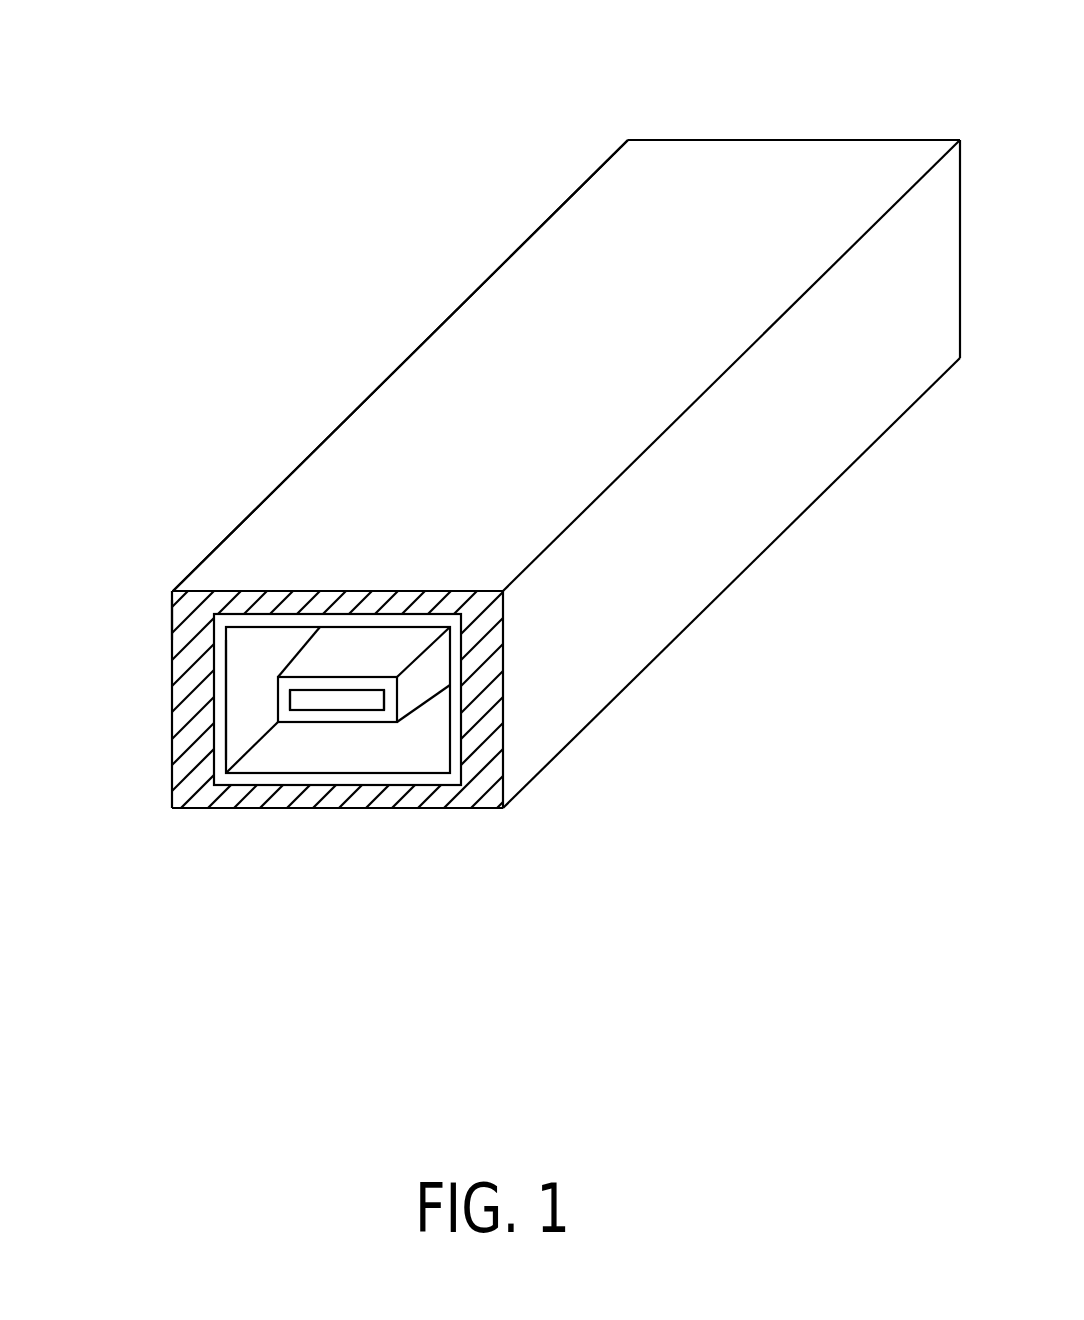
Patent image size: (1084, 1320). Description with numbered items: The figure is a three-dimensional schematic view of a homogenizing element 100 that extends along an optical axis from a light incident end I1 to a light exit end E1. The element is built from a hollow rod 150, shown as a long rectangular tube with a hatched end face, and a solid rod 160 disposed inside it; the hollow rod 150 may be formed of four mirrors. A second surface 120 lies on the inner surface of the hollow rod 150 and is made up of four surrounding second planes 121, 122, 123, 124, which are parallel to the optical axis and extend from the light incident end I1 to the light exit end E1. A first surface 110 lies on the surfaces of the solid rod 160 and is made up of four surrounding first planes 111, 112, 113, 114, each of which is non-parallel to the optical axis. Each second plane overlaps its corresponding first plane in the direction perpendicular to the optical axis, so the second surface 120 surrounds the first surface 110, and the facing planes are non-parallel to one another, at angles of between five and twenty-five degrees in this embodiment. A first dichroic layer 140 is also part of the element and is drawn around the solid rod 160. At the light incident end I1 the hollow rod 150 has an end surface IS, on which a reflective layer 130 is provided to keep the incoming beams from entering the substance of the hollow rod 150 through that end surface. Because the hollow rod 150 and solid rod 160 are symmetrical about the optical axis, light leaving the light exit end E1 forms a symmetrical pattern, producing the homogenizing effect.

The homogenizing element 100 is at (192, 163).
The light exit end E1 is at (667, 132).
The light incident end I1 is at (167, 620).
The end surface IS is at (200, 757).
The hollow rod 150 is at (718, 553).
The second surface 120 is at (357, 699).
The second plane 121 is at (422, 610).
The second plane 122 is at (302, 793).
The second plane 123 is at (210, 730).
The second plane 124 is at (473, 713).
The reflective layer 130 is at (455, 747).
The first dichroic layer 140 is at (362, 683).
The first surface 110 is at (337, 700).
The first plane 111 is at (308, 687).
The first plane 112 is at (360, 714).
The first plane 113 is at (283, 707).
The first plane 114 is at (388, 707).
The solid rod 160 is at (342, 700).